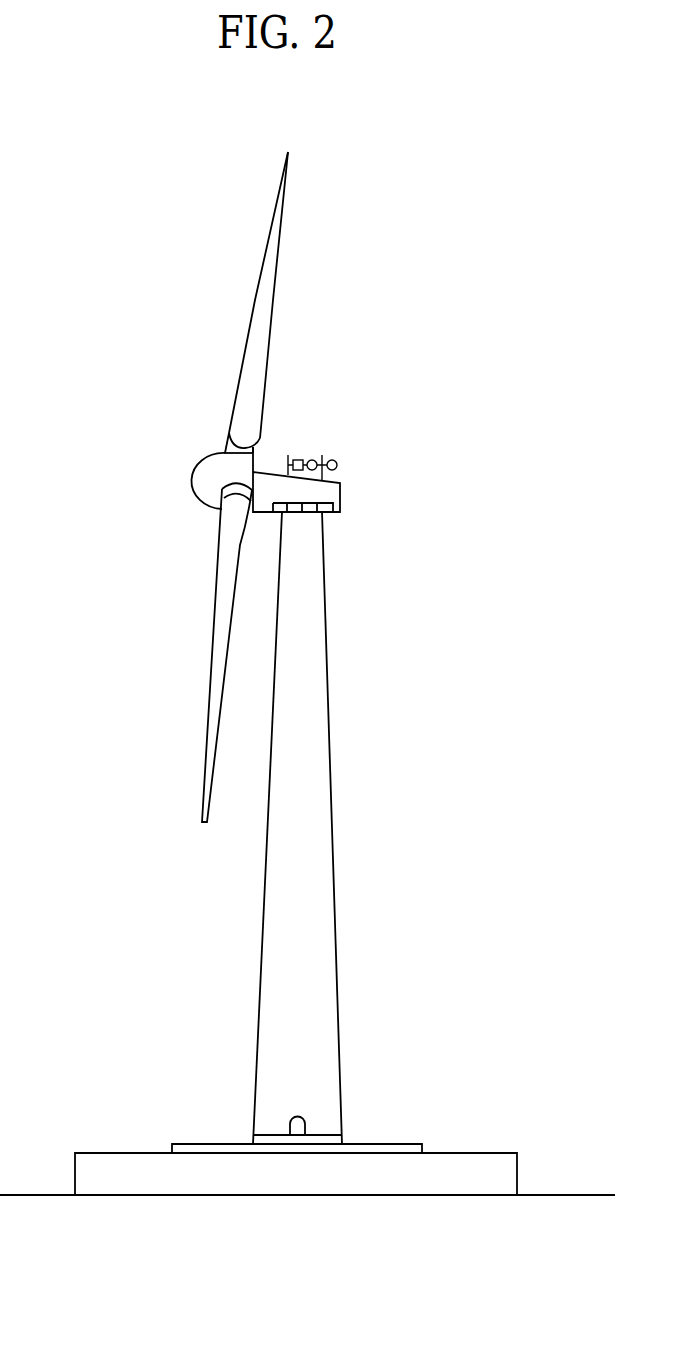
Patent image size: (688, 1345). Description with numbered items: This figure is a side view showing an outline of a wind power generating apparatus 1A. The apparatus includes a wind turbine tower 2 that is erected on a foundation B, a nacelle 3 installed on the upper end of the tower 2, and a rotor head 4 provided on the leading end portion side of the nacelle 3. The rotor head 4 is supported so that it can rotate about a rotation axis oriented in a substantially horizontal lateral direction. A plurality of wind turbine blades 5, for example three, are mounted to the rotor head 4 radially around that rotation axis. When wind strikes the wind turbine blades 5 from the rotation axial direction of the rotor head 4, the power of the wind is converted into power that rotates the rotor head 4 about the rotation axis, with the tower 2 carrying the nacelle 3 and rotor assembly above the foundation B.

The wind power generating apparatus 1A is at (428, 408).
The wind turbine tower 2 is at (328, 693).
The nacelle 3 is at (327, 428).
The rotor head 4 is at (190, 476).
The wind turbine blade 5 is at (280, 247).
The foundation B is at (478, 1153).